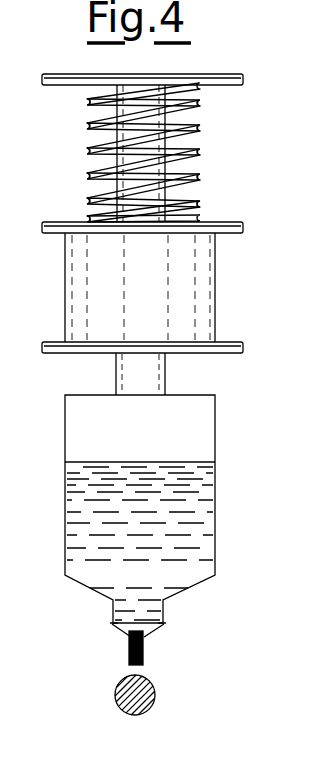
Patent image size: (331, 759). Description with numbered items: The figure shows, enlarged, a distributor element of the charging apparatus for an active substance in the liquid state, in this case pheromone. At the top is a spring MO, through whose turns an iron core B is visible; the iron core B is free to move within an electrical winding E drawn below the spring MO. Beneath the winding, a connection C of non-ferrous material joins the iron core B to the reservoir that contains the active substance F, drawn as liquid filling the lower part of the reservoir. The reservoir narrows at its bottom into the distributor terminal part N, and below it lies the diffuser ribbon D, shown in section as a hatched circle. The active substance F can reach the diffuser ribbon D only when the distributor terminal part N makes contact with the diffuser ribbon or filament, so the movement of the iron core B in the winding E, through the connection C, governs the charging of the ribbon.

The spring MO is at (203, 121).
The iron core B is at (118, 158).
The electrical winding E is at (201, 288).
The connection of non-ferrous material C is at (132, 380).
The active substance F is at (187, 477).
The distributor terminal part N is at (144, 651).
The diffuser ribbon D is at (156, 695).